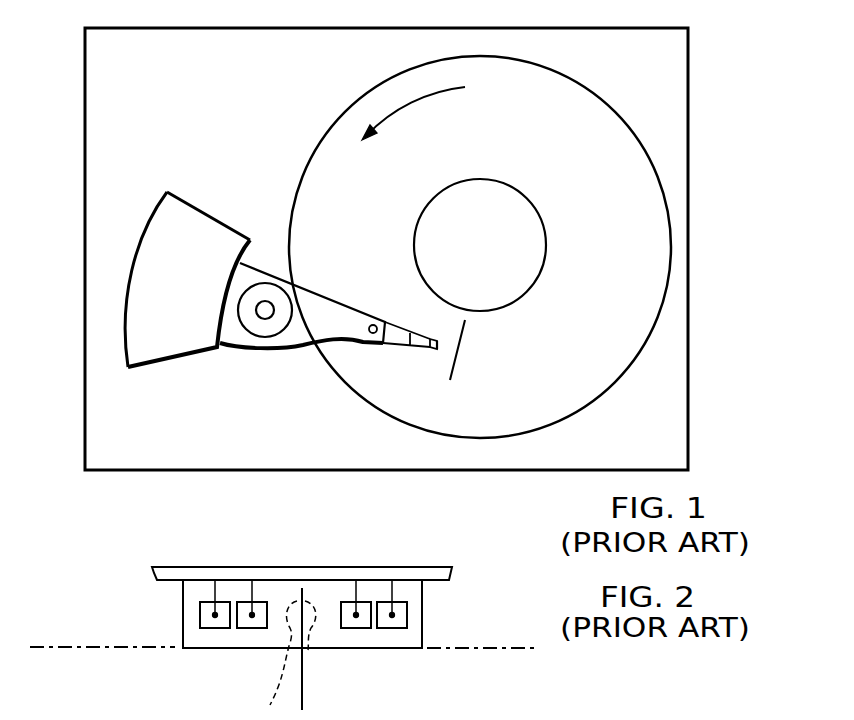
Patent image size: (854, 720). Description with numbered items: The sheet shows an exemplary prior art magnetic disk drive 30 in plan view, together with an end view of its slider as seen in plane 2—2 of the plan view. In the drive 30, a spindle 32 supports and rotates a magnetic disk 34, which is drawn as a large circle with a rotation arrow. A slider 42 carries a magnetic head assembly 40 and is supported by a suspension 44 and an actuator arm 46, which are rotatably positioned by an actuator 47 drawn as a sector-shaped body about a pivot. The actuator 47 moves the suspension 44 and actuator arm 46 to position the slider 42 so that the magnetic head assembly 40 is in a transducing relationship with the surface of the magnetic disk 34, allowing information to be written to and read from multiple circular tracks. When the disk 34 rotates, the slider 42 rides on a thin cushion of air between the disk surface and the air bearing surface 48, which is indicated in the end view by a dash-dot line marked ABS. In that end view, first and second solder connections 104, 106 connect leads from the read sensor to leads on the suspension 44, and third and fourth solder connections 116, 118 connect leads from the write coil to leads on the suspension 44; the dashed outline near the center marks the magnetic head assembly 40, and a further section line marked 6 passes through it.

In FIG. 1, the magnetic disk drive 30 is at (707, 35).
In FIG. 1, the spindle 32 is at (503, 181).
In FIG. 1, the magnetic disk 34 is at (602, 251).
In FIG. 1, the magnetic head assembly 40 is at (438, 346).
In FIG. 2, the magnetic head assembly 40 is at (283, 664).
In FIG. 1, the slider 42 is at (437, 338).
In FIG. 2, the slider 42 is at (183, 610).
In FIG. 1, the suspension 44 is at (393, 347).
In FIG. 1, the actuator arm 46 is at (310, 286).
In FIG. 1, the actuator 47 is at (202, 211).
In FIG. 2, the air bearing surface 48 is at (74, 648).
In FIG. 2, the first solder connection 104 is at (200, 603).
In FIG. 2, the second solder connection 106 is at (378, 603).
In FIG. 2, the third solder connection 116 is at (236, 603).
In FIG. 2, the fourth solder connection 118 is at (340, 603).
In FIG. 1, the plane 2— 2 is at (472, 331).
In FIG. 2, the section line 6- 6 is at (318, 605).